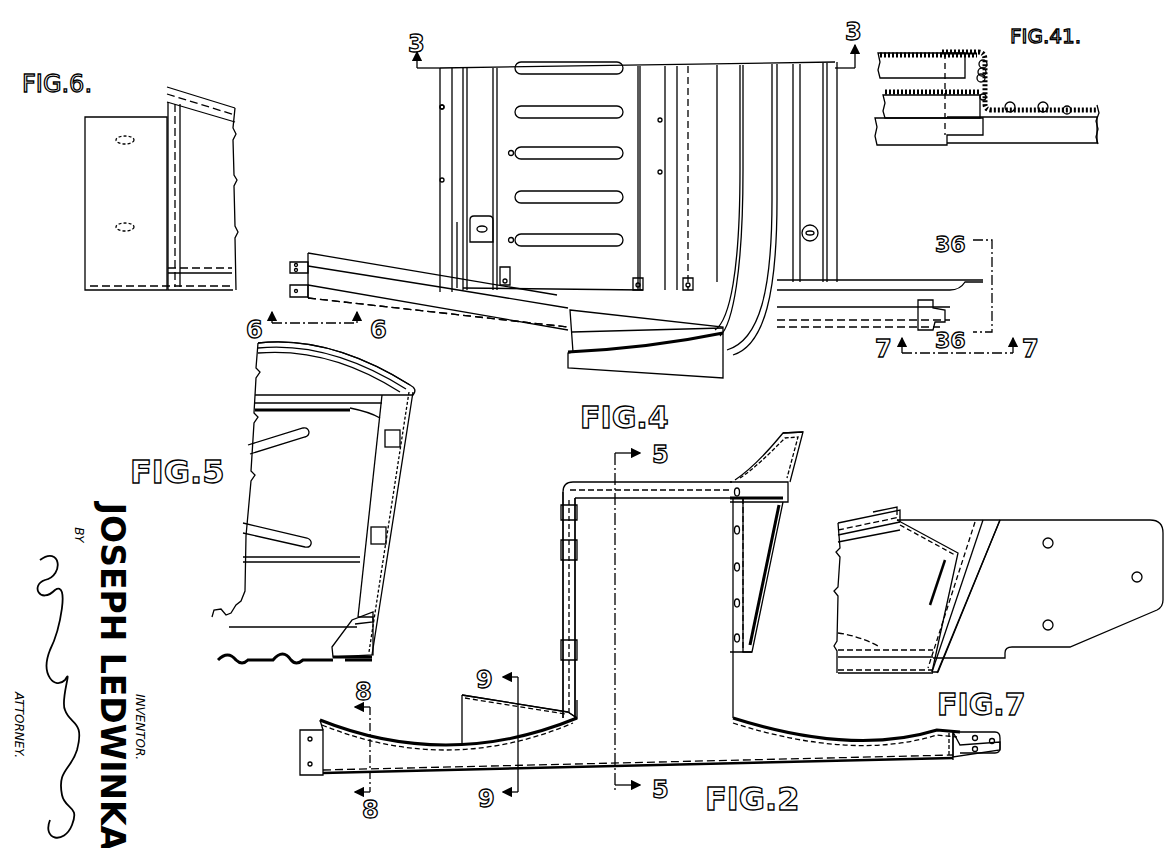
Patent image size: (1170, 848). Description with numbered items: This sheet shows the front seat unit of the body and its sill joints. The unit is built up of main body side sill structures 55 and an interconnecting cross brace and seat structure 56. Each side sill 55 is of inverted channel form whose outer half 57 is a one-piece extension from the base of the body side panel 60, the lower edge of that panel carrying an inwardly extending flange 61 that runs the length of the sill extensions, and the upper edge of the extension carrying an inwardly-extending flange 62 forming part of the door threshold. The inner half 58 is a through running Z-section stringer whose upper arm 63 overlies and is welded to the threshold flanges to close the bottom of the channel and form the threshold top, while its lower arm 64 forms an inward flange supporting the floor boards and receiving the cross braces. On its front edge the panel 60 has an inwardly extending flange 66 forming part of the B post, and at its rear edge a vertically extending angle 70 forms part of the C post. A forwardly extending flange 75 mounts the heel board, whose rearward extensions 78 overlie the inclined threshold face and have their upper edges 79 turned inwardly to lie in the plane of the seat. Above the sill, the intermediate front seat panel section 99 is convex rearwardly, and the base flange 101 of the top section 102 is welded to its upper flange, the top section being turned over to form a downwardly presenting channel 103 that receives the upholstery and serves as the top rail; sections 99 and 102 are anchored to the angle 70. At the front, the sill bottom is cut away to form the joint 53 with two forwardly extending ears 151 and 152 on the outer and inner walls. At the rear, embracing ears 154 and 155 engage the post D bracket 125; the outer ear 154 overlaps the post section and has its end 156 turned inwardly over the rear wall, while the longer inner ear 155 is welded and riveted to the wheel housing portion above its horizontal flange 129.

In FIG. 7, the joint between front seat unit and cowl unit 53 is at (863, 513).
In FIG. 6, the main body side sill structure 55 is at (195, 185).
In FIG. 4, the main body side sill structure 55 is at (452, 313).
In FIG. 2, the main body side sill structure 55 is at (802, 730).
In FIG. 4, the interconnecting cross brace and seat structure 56 is at (438, 130).
In FIG. 41, the outer half of sill channel section 57 is at (925, 58).
In FIG. 2, the outer half of sill channel section 57 is at (433, 760).
In FIG. 4, the inner half of sill 58 is at (372, 273).
In FIG. 41, the inner half of sill 58 is at (878, 96).
In FIG. 5, the inner half of sill 58 is at (345, 621).
In FIG. 7, the inner half of sill 58 is at (937, 533).
In FIG. 5, the body side panel 60 is at (402, 505).
In FIG. 2, the body side panel 60 is at (647, 600).
In FIG. 41, the inwardly extending flange 61 is at (888, 64).
In FIG. 5, the inwardly extending flange 61 is at (349, 666).
In FIG. 7, the inwardly-extending flange 62 is at (903, 516).
In FIG. 4, the upper arm of Z section 63 is at (398, 302).
In FIG. 5, the upper arm of Z section 63 is at (370, 612).
In FIG. 4, the lower arm of Z section 64 is at (328, 258).
In FIG. 41, the lower arm of Z section 64 is at (908, 133).
In FIG. 5, the lower arm of Z section 64 is at (322, 662).
In FIG. 7, the lower arm of Z section 64 is at (843, 634).
In FIG. 2, the inwardly extending flange on front edge of panel 66 is at (577, 630).
In FIG. 2, the vertically extending angle 70 is at (737, 554).
In FIG. 4, the forwardly extending flange 75 is at (440, 106).
In FIG. 2, the forwardly extending flange 75 is at (462, 710).
In FIG. 2, the rearward extension of heel board 78 is at (519, 712).
In FIG. 2, the upper edge of rearward extension 79 is at (535, 704).
In FIG. 2, the intermediate front seat panel section 99 is at (783, 537).
In FIG. 2, the base flange of top section 101 is at (768, 493).
In FIG. 2, the top section of rear seat panel 102 is at (783, 469).
In FIG. 5, the downwardly presenting channel 103 is at (375, 365).
In FIG. 2, the downwardly presenting channel 103 is at (797, 437).
In FIG. 41, the post D bracket 125 is at (1035, 100).
In FIG. 41, the inwardly-extending horizontal flange 129 is at (1043, 128).
In FIG. 6, the outer ear 151 is at (112, 228).
In FIG. 4, the outer ear 151 is at (290, 292).
In FIG. 4, the inner ear 152 is at (290, 266).
In FIG. 4, the outer ear 154 is at (938, 327).
In FIG. 41, the outer ear 154 is at (955, 52).
In FIG. 2, the outer ear 154 is at (937, 748).
In FIG. 41, the inner ear 155 is at (1085, 112).
In FIG. 2, the inner ear 155 is at (1002, 741).
In FIG. 7, the inner ear 155 is at (1090, 618).
In FIG. 41, the inturned end of outer ear 156 is at (988, 82).
In FIG. 2, the inturned end of outer ear 156 is at (955, 758).
In FIG. 7, the inturned end of outer ear 156 is at (943, 628).